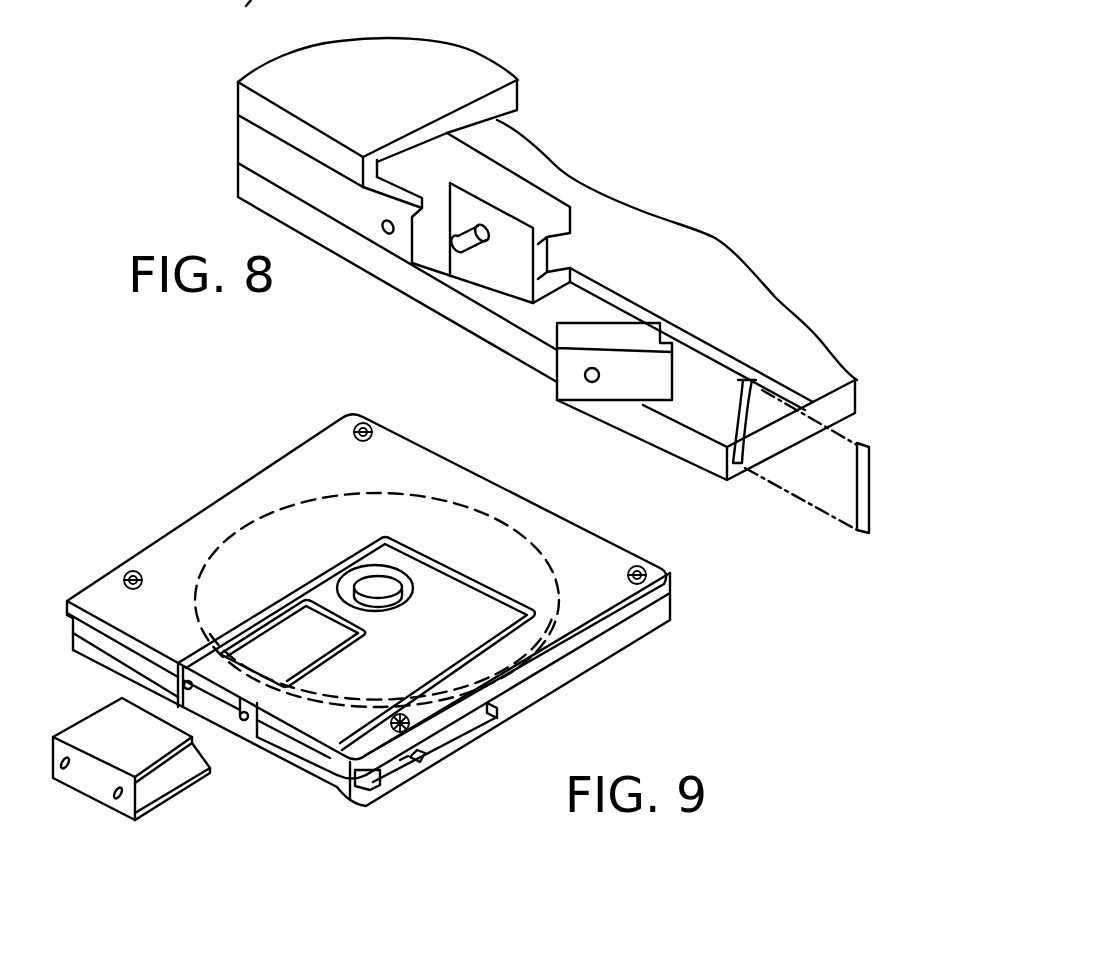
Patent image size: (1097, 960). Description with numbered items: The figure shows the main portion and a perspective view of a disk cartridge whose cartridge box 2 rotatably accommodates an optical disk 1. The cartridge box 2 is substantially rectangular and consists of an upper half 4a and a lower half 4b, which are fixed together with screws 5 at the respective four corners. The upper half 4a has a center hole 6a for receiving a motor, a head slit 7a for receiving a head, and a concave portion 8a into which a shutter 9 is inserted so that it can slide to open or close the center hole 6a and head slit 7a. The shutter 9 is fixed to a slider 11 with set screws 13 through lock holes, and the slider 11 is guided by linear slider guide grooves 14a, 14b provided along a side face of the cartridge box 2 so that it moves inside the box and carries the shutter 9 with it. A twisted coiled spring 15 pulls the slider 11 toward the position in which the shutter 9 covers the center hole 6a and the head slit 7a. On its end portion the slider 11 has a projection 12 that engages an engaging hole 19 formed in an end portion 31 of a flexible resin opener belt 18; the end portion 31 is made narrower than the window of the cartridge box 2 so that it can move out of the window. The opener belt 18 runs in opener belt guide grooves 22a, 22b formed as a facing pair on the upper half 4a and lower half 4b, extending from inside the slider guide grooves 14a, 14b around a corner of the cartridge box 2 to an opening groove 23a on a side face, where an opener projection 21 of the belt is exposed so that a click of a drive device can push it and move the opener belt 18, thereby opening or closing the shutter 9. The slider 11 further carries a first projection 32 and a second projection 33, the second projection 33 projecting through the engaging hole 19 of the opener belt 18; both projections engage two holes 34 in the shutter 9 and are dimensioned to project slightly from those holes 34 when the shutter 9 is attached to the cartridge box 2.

In FIG. 9, the optical disk 1 is at (267, 527).
In FIG. 9, the cartridge box 2 is at (415, 447).
In FIG. 8, the upper half 4a is at (356, 62).
In FIG. 9, the upper half 4a is at (557, 527).
In FIG. 8, the lower half 4b is at (730, 287).
In FIG. 9, the lower half 4b is at (625, 643).
In FIG. 9, the screws 5 is at (639, 566).
In FIG. 9, the center hole 6a is at (347, 573).
In FIG. 9, the head slit 7a is at (267, 627).
In FIG. 9, the concave portion 8a is at (457, 587).
In FIG. 9, the shutter 9 is at (93, 725).
In FIG. 8, the slider 11 is at (493, 182).
In FIG. 9, the slider 11 is at (178, 660).
In FIG. 8, the projection 12 is at (460, 253).
In FIG. 8, the set screws 13 is at (77, 7).
In FIG. 8, the slider guide groove 14a is at (428, 138).
In FIG. 8, the slider guide groove 14b is at (763, 420).
In FIG. 8, the twisted coiled spring 15 is at (246, 16).
In FIG. 8, the opener belt 18 is at (705, 383).
In FIG. 9, the opener belt 18 is at (303, 750).
In FIG. 8, the engaging hole 19 is at (592, 382).
In FIG. 9, the opener projection 21 is at (424, 757).
In FIG. 8, the opener belt guide groove 22a is at (383, 163).
In FIG. 8, the opener belt guide groove 22b is at (742, 464).
In FIG. 9, the opening groove 23a is at (381, 784).
In FIG. 8, the end portion 31 is at (567, 387).
In FIG. 9, the end portion 31 is at (258, 732).
In FIG. 9, the first projection 32 is at (80, 590).
In FIG. 9, the second projection 33 is at (186, 681).
In FIG. 9, the holes 34 is at (120, 798).